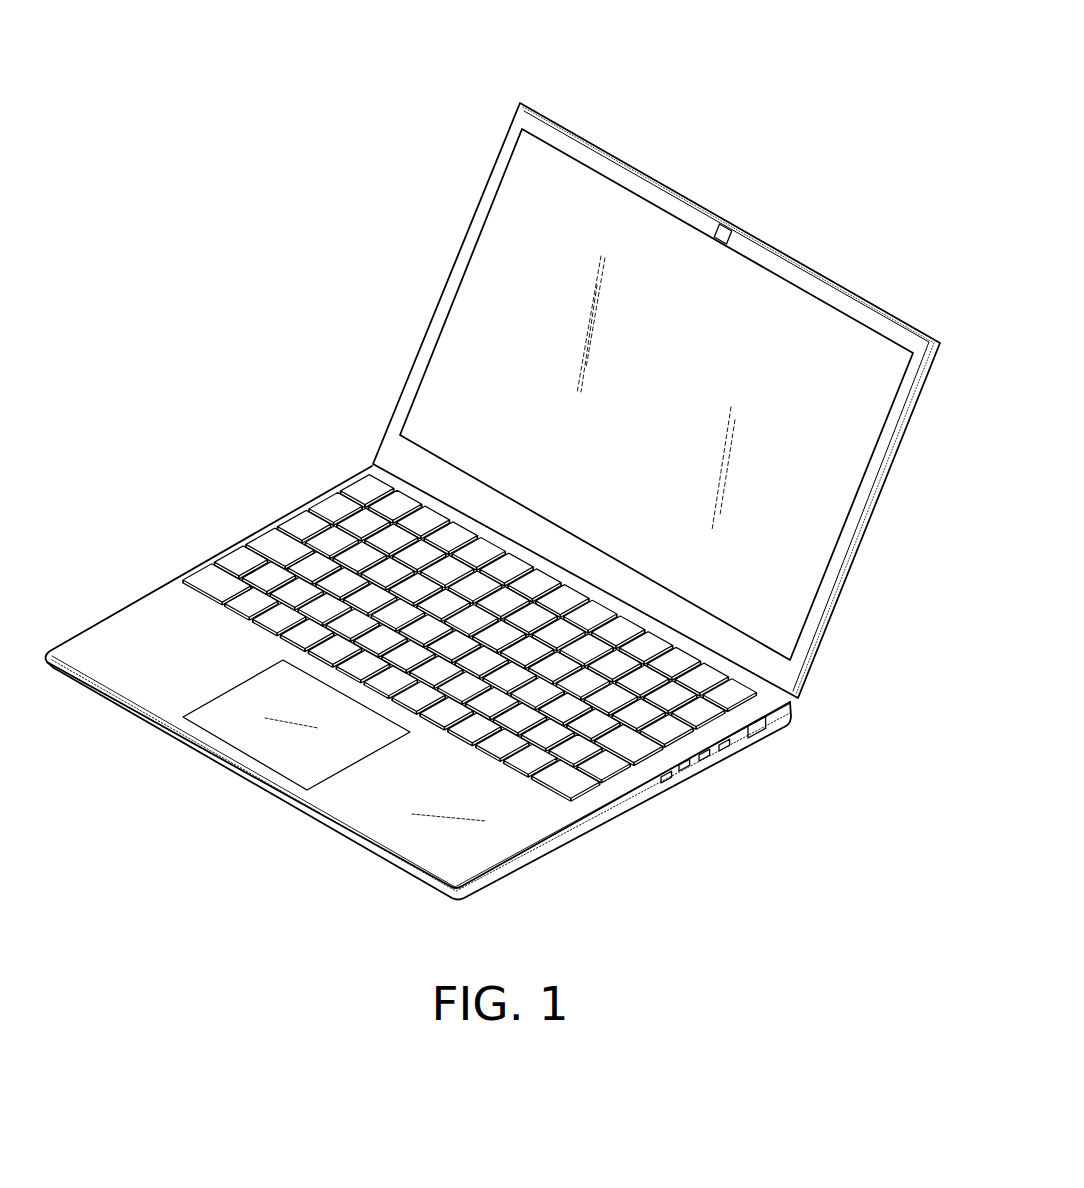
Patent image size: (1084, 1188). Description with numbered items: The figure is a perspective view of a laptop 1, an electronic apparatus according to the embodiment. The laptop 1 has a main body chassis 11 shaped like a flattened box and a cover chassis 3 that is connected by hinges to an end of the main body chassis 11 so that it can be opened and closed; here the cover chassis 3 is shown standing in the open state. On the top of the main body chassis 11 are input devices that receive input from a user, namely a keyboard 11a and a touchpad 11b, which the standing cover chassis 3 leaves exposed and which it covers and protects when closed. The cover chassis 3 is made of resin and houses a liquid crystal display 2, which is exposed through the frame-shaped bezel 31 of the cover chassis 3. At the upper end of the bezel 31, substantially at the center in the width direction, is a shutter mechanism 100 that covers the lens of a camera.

The laptop 1 is at (507, 475).
The liquid crystal display 2 is at (477, 343).
The cover chassis 3 is at (669, 400).
The bezel 31 is at (871, 318).
The shutter mechanism 100 is at (728, 226).
The main body chassis 11 is at (418, 671).
The keyboard 11a is at (287, 554).
The touchpad 11b is at (258, 742).